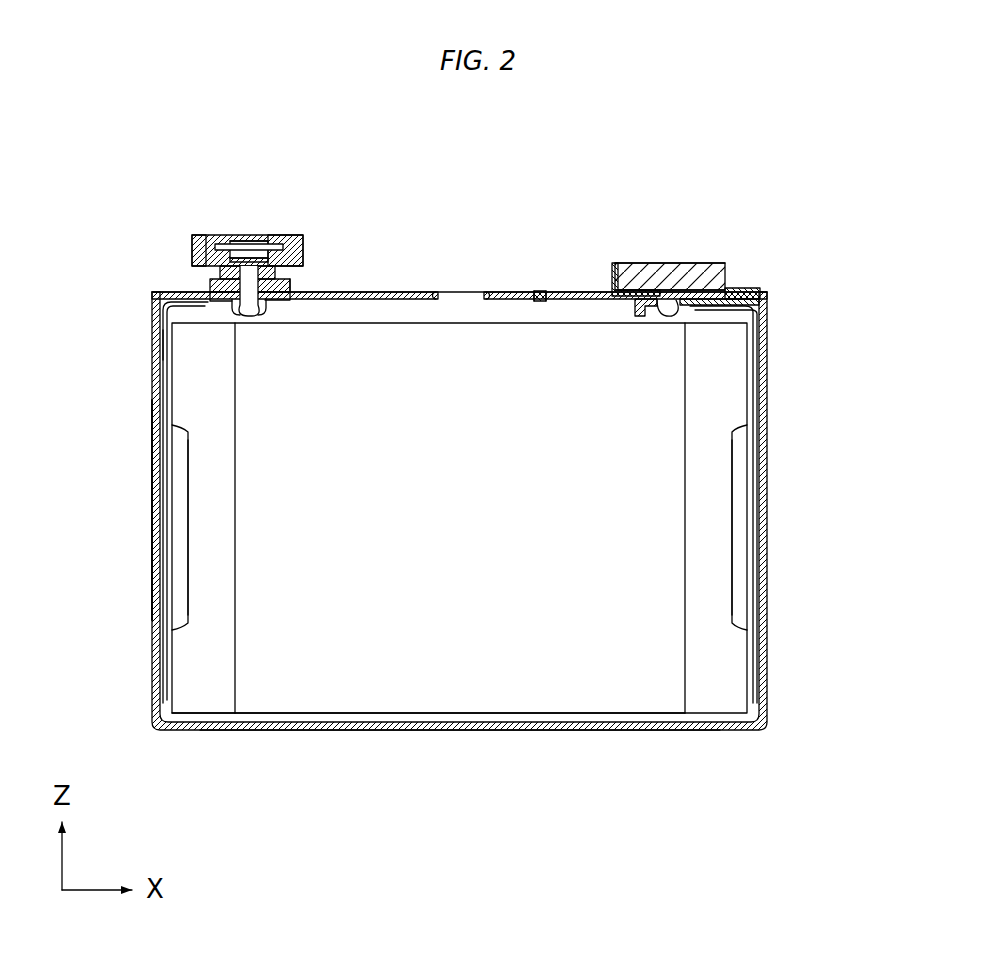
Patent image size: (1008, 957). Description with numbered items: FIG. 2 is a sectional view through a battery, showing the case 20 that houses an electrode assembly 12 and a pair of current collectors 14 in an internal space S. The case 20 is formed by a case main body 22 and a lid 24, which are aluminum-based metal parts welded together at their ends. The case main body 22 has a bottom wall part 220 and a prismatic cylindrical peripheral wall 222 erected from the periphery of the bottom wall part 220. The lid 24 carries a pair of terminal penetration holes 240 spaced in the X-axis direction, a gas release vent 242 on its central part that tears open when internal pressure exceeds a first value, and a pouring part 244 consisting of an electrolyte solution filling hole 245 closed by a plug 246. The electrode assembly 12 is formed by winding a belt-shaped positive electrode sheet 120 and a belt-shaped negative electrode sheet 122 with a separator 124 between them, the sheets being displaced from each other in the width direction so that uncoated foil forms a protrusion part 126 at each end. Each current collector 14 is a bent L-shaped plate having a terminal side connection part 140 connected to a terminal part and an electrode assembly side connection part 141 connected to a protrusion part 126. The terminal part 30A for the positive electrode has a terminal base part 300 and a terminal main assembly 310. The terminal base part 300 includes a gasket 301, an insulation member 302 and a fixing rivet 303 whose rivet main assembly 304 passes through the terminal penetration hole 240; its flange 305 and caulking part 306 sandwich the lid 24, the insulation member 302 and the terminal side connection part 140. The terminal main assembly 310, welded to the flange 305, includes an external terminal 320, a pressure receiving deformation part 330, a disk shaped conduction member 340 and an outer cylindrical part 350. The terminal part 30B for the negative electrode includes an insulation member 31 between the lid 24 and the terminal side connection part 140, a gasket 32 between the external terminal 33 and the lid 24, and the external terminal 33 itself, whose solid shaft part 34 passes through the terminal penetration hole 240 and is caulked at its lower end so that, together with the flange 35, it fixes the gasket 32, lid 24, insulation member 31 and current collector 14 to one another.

The electrode assembly 12 is at (503, 725).
The current collector 14 is at (186, 518).
The case 20 is at (873, 272).
The case main body 22 is at (772, 378).
The lid 24 is at (752, 290).
The positive electrode sheet 120 is at (205, 695).
The negative electrode sheet 122 is at (712, 695).
The separator 124 is at (385, 695).
The protrusion part 126 is at (218, 715).
The terminal side connection part 140 is at (205, 303).
The electrode assembly side connection part 141 is at (172, 450).
The bottom wall part 220 is at (595, 730).
The peripheral wall 222 is at (152, 585).
The terminal penetration hole 240 is at (235, 314).
The gas release vent 242 is at (457, 290).
The pouring part 244 is at (487, 210).
The electrolyte solution filling hole 245 is at (538, 292).
The plug 246 is at (543, 292).
The terminal part for the positive electrode 30A is at (283, 136).
The terminal part for the negative electrode 30B is at (707, 242).
The insulation member 31 is at (746, 291).
The gasket 32 is at (613, 266).
The external terminal 33 is at (669, 262).
The shaft part 34 is at (642, 302).
The flange 35 is at (652, 263).
The terminal base part 300 is at (308, 250).
The gasket 301 is at (294, 288).
The insulation member 302 is at (268, 302).
The fixing rivet 303 is at (255, 320).
The rivet main assembly 304 is at (250, 320).
The flange 305 is at (293, 273).
The caulking part 306 is at (263, 320).
The terminal main assembly 310 is at (303, 260).
The external terminal 320 is at (238, 238).
The pressure receiving deformation part 330 is at (245, 240).
The disk shaped conduction member 340 is at (220, 271).
The outer cylindrical part 350 is at (190, 250).
The internal space S is at (437, 216).